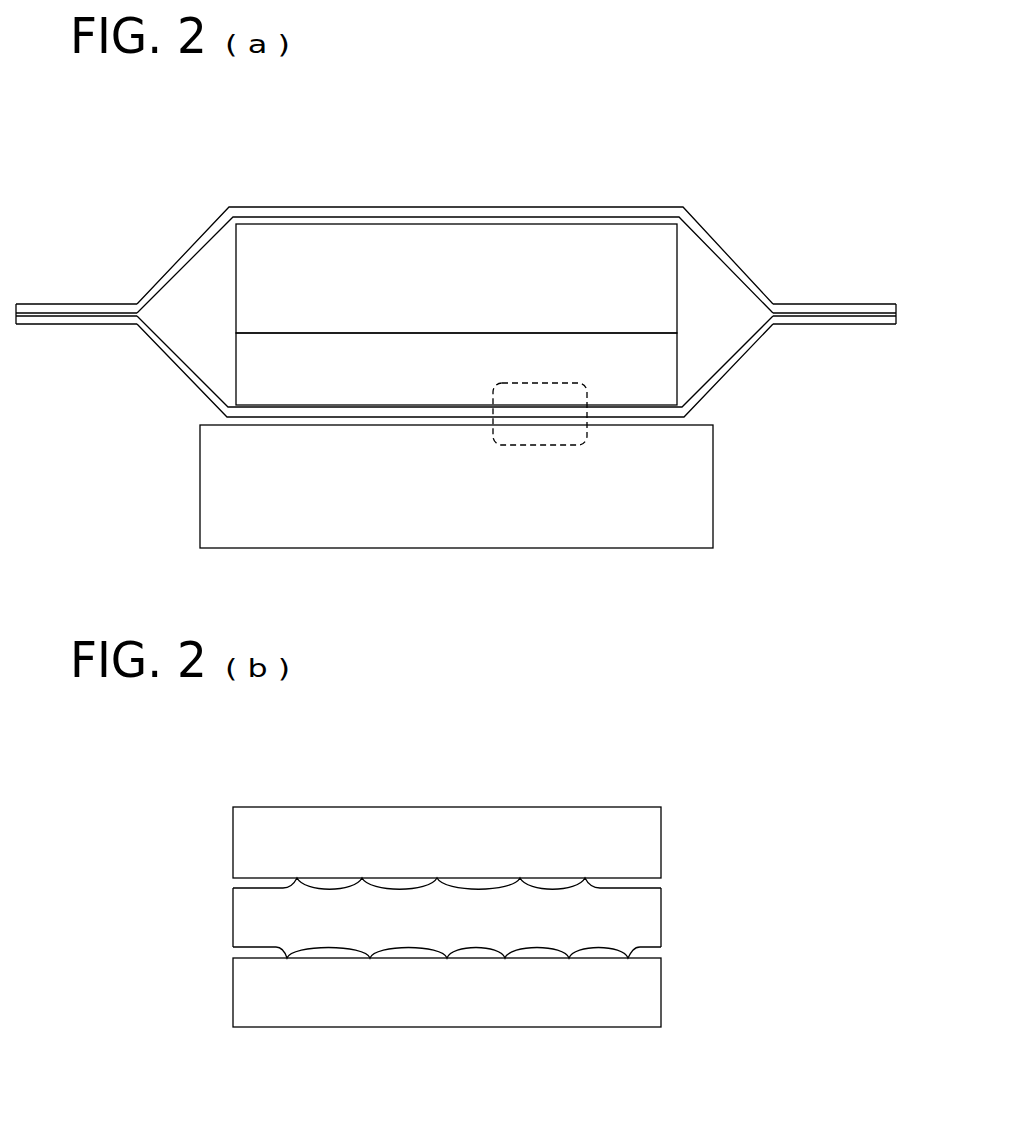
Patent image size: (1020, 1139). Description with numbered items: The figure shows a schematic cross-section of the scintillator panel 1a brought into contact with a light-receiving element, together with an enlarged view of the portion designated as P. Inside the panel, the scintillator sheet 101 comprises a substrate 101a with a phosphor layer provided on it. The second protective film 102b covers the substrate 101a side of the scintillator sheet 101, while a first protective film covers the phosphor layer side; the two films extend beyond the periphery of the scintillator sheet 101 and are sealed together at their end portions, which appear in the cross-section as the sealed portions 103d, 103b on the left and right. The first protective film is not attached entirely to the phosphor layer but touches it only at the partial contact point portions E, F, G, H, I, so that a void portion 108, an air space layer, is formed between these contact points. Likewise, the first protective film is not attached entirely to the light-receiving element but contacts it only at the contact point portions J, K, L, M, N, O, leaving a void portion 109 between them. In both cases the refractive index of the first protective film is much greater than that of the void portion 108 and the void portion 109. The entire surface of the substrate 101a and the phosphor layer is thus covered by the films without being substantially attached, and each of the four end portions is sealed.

The scintillator panel 1a is at (663, 142).
The scintillator sheet 101 is at (231, 380).
The substrate 101a is at (664, 278).
The second protective film 102b is at (453, 207).
The sealed portion 103b is at (833, 313).
The sealed portion 103d is at (65, 313).
The void portion 108 is at (653, 883).
The void portion 109 is at (653, 950).
The portion P is at (540, 430).
The contact point portion E is at (297, 878).
The contact point portion F is at (362, 878).
The contact point portion G is at (437, 878).
The contact point portion H is at (520, 878).
The contact point portion I is at (585, 878).
The contact point portion J is at (287, 958).
The contact point portion K is at (370, 958).
The contact point portion L is at (447, 958).
The contact point portion M is at (505, 958).
The contact point portion N is at (569, 958).
The contact point portion O is at (628, 958).